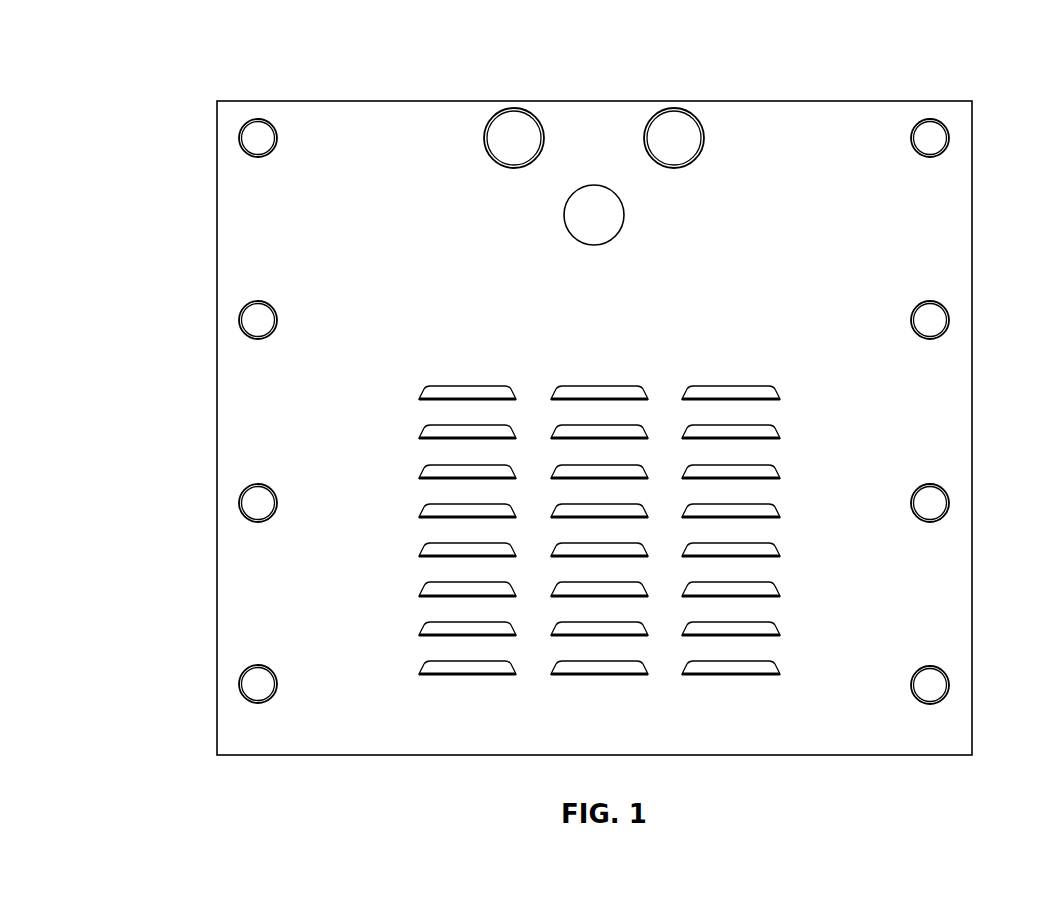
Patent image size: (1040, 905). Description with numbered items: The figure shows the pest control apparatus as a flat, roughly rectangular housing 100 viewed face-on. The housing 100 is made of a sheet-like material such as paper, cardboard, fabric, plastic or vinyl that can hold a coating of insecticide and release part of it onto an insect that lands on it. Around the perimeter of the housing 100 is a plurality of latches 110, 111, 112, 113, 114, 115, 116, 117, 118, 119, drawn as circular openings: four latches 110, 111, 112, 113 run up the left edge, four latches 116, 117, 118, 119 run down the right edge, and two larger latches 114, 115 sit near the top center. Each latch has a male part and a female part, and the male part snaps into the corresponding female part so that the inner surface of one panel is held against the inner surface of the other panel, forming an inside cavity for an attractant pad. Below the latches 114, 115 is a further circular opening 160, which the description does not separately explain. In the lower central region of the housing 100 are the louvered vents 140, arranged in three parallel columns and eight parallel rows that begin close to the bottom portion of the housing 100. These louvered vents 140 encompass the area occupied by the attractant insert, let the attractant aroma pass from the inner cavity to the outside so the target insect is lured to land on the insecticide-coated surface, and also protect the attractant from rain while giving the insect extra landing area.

The housing 100 is at (199, 64).
The latch 110 is at (252, 684).
The latch 111 is at (252, 503).
The latch 112 is at (252, 320).
The latch 113 is at (252, 138).
The latch 114 is at (518, 120).
The latch 115 is at (683, 120).
The latch 116 is at (937, 138).
The latch 117 is at (937, 320).
The latch 118 is at (937, 503).
The latch 119 is at (937, 685).
The louvered vents 140 is at (457, 686).
The central opening 160 is at (594, 180).